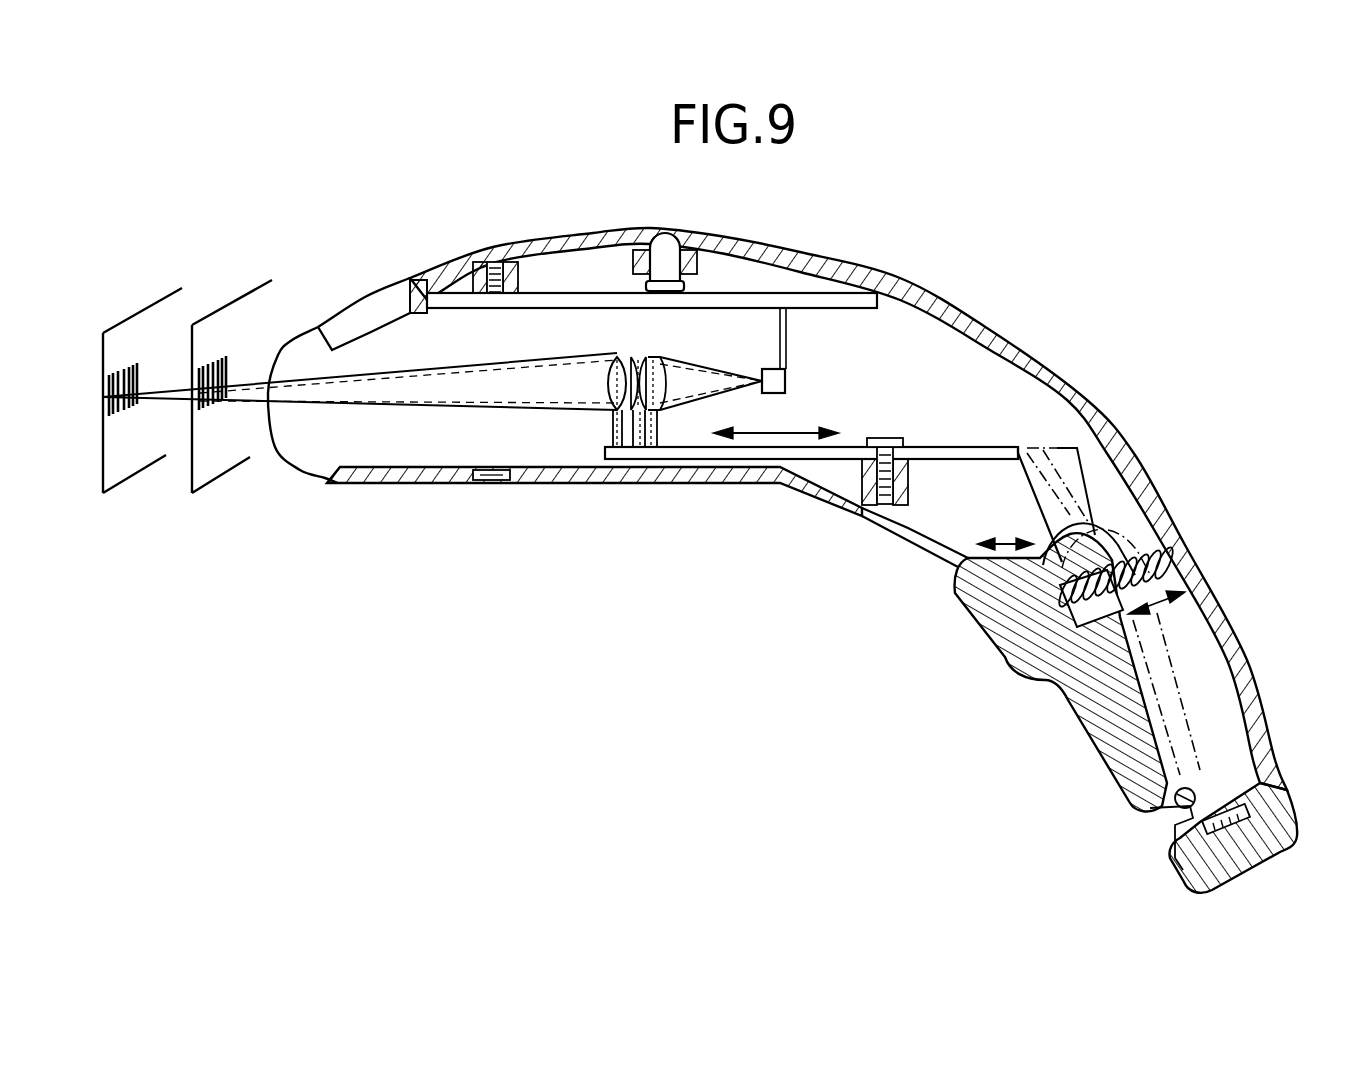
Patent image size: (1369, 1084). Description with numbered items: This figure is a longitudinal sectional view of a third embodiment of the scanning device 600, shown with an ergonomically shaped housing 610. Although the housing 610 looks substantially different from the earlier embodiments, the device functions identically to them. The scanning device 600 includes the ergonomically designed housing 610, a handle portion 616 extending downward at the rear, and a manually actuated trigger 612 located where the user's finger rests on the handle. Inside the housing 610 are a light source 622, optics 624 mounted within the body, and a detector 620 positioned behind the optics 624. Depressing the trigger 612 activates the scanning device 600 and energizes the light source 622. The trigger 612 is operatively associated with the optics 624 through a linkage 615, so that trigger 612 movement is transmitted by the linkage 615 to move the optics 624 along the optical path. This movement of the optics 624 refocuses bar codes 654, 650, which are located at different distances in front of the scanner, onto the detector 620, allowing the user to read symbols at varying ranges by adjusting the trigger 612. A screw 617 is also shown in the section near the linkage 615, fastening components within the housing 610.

The scanning device 600 is at (1121, 357).
The housing 610 is at (958, 318).
The trigger 612 is at (1020, 658).
The linkage 615 is at (970, 460).
The handle portion 616 is at (1244, 662).
The screw 617 is at (895, 443).
The detector 620 is at (785, 380).
The light source 622 is at (372, 313).
The optics 624 is at (657, 360).
The bar code 650 is at (192, 493).
The bar code 654 is at (103, 493).